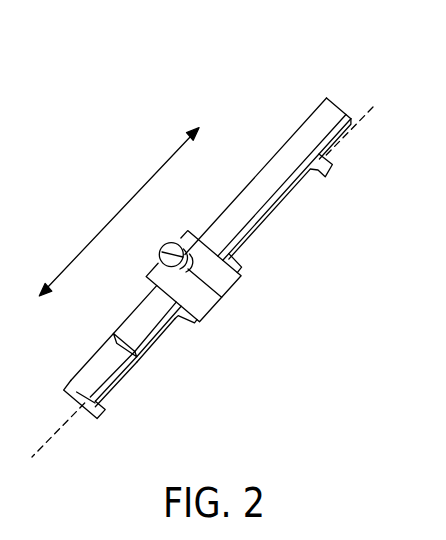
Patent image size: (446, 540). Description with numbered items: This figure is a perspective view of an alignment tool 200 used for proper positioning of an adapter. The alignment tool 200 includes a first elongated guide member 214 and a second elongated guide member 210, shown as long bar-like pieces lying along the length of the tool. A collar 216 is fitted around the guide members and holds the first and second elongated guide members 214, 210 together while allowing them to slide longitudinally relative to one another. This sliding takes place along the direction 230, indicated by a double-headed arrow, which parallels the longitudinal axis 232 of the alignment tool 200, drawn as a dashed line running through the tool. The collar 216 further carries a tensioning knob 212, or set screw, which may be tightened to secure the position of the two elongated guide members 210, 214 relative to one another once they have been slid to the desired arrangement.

The alignment tool 200 is at (221, 220).
The second elongated guide member 210 is at (140, 321).
The tensioning knob 212 is at (226, 279).
The first elongated guide member 214 is at (100, 370).
The collar 216 is at (205, 305).
The direction 230 is at (118, 212).
The longitudinal axis 232 is at (56, 433).